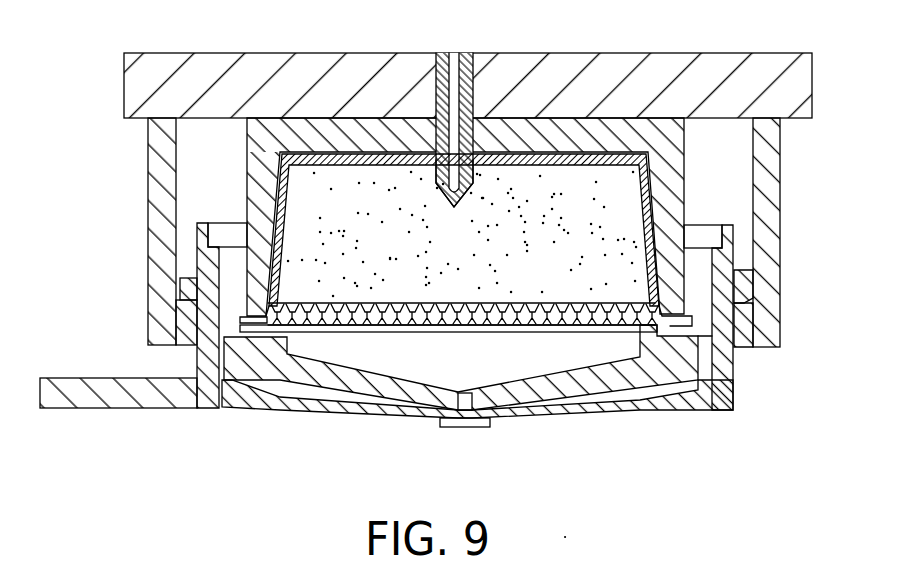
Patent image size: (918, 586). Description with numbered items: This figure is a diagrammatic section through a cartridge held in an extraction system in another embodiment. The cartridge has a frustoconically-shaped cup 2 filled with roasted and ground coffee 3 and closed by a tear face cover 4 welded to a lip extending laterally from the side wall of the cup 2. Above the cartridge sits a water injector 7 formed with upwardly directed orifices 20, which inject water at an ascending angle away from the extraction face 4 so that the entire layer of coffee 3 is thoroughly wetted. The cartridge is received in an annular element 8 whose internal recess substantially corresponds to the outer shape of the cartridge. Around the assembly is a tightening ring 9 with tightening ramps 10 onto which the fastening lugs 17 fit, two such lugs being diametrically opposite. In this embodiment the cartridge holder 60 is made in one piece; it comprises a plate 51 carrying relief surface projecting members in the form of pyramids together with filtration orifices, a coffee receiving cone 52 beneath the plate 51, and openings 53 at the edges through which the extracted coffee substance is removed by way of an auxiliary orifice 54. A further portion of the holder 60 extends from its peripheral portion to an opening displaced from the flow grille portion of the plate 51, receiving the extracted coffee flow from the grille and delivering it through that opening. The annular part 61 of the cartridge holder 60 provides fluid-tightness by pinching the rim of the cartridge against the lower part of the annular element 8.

The cup 2 is at (557, 160).
The roasted and ground coffee 3 is at (402, 254).
The tear face cover 4 is at (530, 312).
The water injector 7 is at (467, 97).
The annular element 8 is at (653, 137).
The tightening ring 9 is at (767, 175).
The tightening ramps 10 is at (753, 342).
The fastening lugs 17 is at (740, 282).
The upwardly directed orifices 20 is at (434, 170).
The plate 51 is at (385, 330).
The coffee receiving cone 52 is at (613, 378).
The openings 53 is at (712, 370).
The auxiliary orifice 54 is at (470, 428).
The cartridge holder 60 is at (113, 390).
The annular part 61 is at (266, 325).